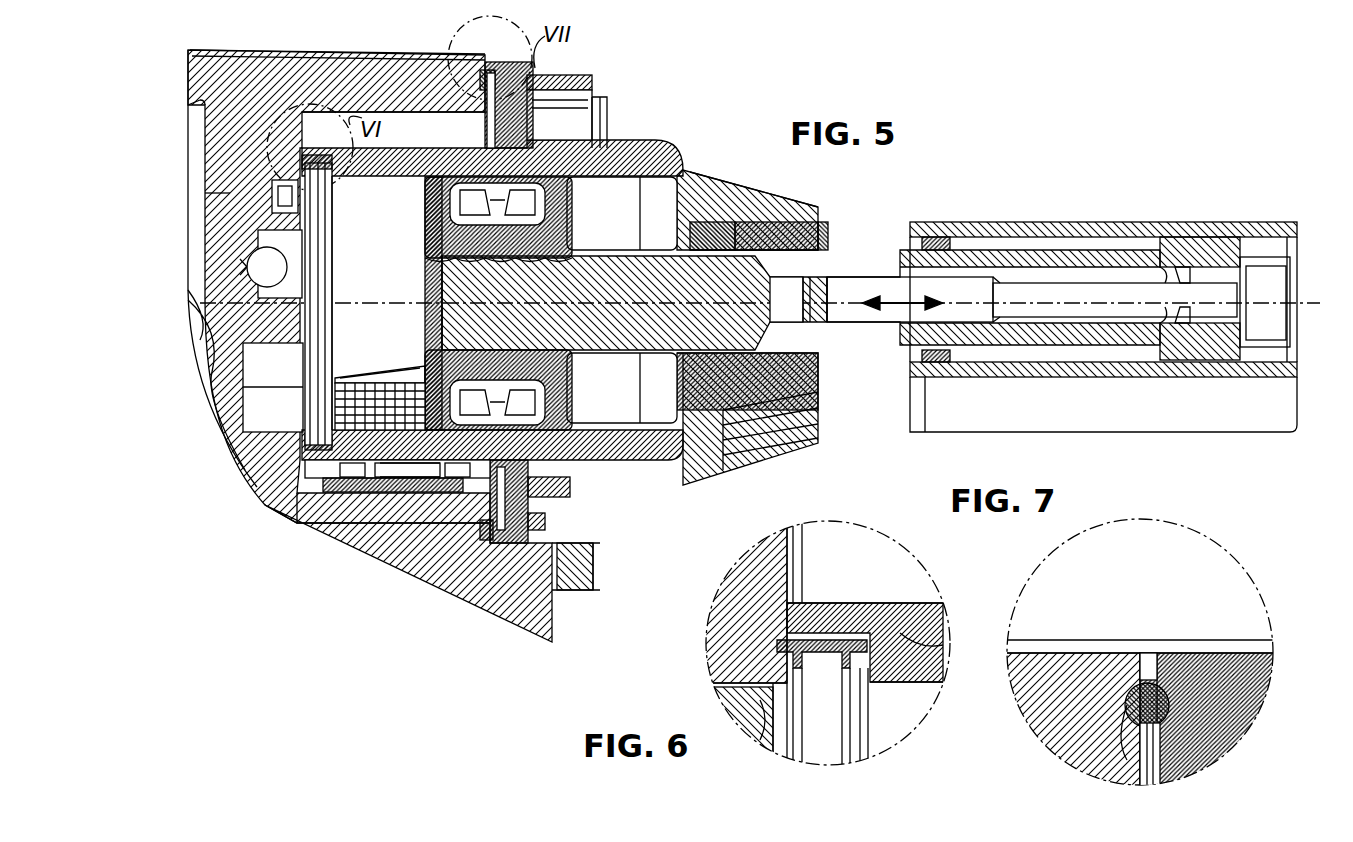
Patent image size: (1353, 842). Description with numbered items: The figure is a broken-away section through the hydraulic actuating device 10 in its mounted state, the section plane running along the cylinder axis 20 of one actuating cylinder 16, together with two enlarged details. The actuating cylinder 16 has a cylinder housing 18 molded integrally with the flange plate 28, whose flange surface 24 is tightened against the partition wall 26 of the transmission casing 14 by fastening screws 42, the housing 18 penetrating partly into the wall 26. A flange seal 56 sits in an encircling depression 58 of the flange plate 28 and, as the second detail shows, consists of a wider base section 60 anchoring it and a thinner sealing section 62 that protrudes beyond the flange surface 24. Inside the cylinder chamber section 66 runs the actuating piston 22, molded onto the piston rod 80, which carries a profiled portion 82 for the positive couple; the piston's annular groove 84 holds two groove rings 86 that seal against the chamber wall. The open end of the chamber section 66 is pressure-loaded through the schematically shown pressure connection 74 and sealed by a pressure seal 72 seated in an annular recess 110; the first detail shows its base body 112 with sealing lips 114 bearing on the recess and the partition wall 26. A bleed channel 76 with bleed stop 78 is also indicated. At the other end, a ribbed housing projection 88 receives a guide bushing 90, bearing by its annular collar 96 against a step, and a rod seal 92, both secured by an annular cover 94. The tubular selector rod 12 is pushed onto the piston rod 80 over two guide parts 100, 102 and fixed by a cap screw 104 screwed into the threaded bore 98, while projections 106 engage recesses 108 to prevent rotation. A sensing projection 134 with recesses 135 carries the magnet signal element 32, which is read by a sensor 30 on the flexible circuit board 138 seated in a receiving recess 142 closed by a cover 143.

In FIG. 5, the hydraulic actuating device 10 is at (742, 163).
In FIG. 6, the hydraulic actuating device 10 is at (842, 582).
In FIG. 7, the hydraulic actuating device 10 is at (1235, 752).
In FIG. 5, the selector rod 12 is at (1128, 220).
In FIG. 5, the transmission casing 14 is at (318, 47).
In FIG. 6, the transmission casing 14 is at (730, 565).
In FIG. 7, the transmission casing 14 is at (1052, 768).
In FIG. 5, the actuating cylinder 16 is at (835, 207).
In FIG. 5, the cylinder housing 18 is at (628, 150).
In FIG. 6, the cylinder housing 18 is at (906, 602).
In FIG. 5, the cylinder axis 20 is at (395, 300).
In FIG. 5, the actuating piston 22 is at (567, 232).
In FIG. 5, the flange surface 24 is at (497, 545).
In FIG. 7, the flange surface 24 is at (1142, 664).
In FIG. 5, the partition wall 26 is at (365, 88).
In FIG. 6, the partition wall 26 is at (732, 658).
In FIG. 7, the partition wall 26 is at (1080, 670).
In FIG. 5, the flange plate 28 is at (530, 585).
In FIG. 7, the flange plate 28 is at (1182, 650).
In FIG. 5, the sensor 30 is at (335, 470).
In FIG. 5, the signal element 32 is at (362, 392).
In FIG. 5, the fastening screw 42 is at (578, 560).
In FIG. 5, the flange seal 56 is at (490, 75).
In FIG. 7, the flange seal 56 is at (1132, 725).
In FIG. 5, the depression 58 is at (482, 528).
In FIG. 7, the depression 58 is at (1152, 762).
In FIG. 7, the base section 60 is at (1152, 653).
In FIG. 7, the sealing section 62 is at (1050, 757).
In FIG. 5, the cylinder chamber section 66 is at (397, 231).
In FIG. 6, the cylinder chamber section 66 is at (919, 713).
In FIG. 5, the pressure seal 72 is at (322, 282).
In FIG. 6, the pressure seal 72 is at (812, 750).
In FIG. 5, the pressure connection 74 is at (280, 280).
In FIG. 5, the bleed channel 76 is at (228, 198).
In FIG. 5, the bleed stop 78 is at (300, 212).
In FIG. 6, the bleed stop 78 is at (758, 732).
In FIG. 5, the piston rod 80 is at (852, 257).
In FIG. 5, the profiled portion 82 is at (520, 352).
In FIG. 5, the annular groove 84 is at (500, 396).
In FIG. 5, the groove ring 86 is at (483, 172).
In FIG. 5, the housing projection 88 is at (768, 217).
In FIG. 5, the guide bushing 90 is at (830, 236).
In FIG. 5, the rod seal 92 is at (662, 380).
In FIG. 5, the annular cover 94 is at (668, 220).
In FIG. 5, the annular collar 96 is at (737, 226).
In FIG. 5, the threaded bore 98 is at (798, 299).
In FIG. 5, the guide part 100 is at (930, 238).
In FIG. 5, the guide part 102 is at (1203, 262).
In FIG. 5, the cap screw 104 is at (1048, 313).
In FIG. 5, the projection 106 is at (1168, 332).
In FIG. 5, the recess 108 is at (1190, 290).
In FIG. 5, the annular recess 110 is at (330, 436).
In FIG. 6, the annular recess 110 is at (806, 625).
In FIG. 6, the base body 112 is at (822, 682).
In FIG. 6, the sealing lip 114 is at (922, 612).
In FIG. 5, the sensing projection 134 is at (337, 378).
In FIG. 5, the recess 135 is at (395, 378).
In FIG. 5, the flexible circuit board 138 is at (300, 472).
In FIG. 5, the receiving recess 142 is at (398, 470).
In FIG. 5, the cover 143 is at (337, 458).